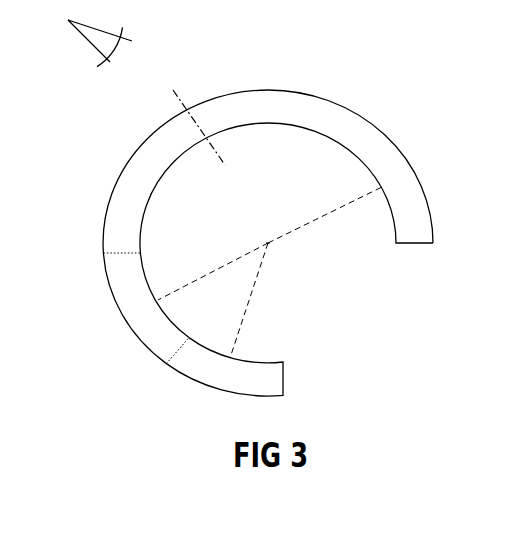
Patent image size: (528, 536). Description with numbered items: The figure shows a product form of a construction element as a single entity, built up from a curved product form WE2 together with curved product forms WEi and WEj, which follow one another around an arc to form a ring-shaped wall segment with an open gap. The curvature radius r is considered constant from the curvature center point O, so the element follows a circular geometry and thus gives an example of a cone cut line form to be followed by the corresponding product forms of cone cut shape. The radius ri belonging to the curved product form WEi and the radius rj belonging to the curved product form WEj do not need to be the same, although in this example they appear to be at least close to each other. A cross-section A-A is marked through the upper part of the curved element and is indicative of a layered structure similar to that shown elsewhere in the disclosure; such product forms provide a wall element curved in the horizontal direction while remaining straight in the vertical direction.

The cross-section A-A is at (146, 92).
The curved product form WE2 is at (352, 132).
The curved product form WEi is at (131, 308).
The curved product form WEj is at (254, 367).
The curvature center point O is at (258, 228).
The curvature radius r is at (325, 210).
The radius ri is at (213, 279).
The radius rj is at (249, 300).